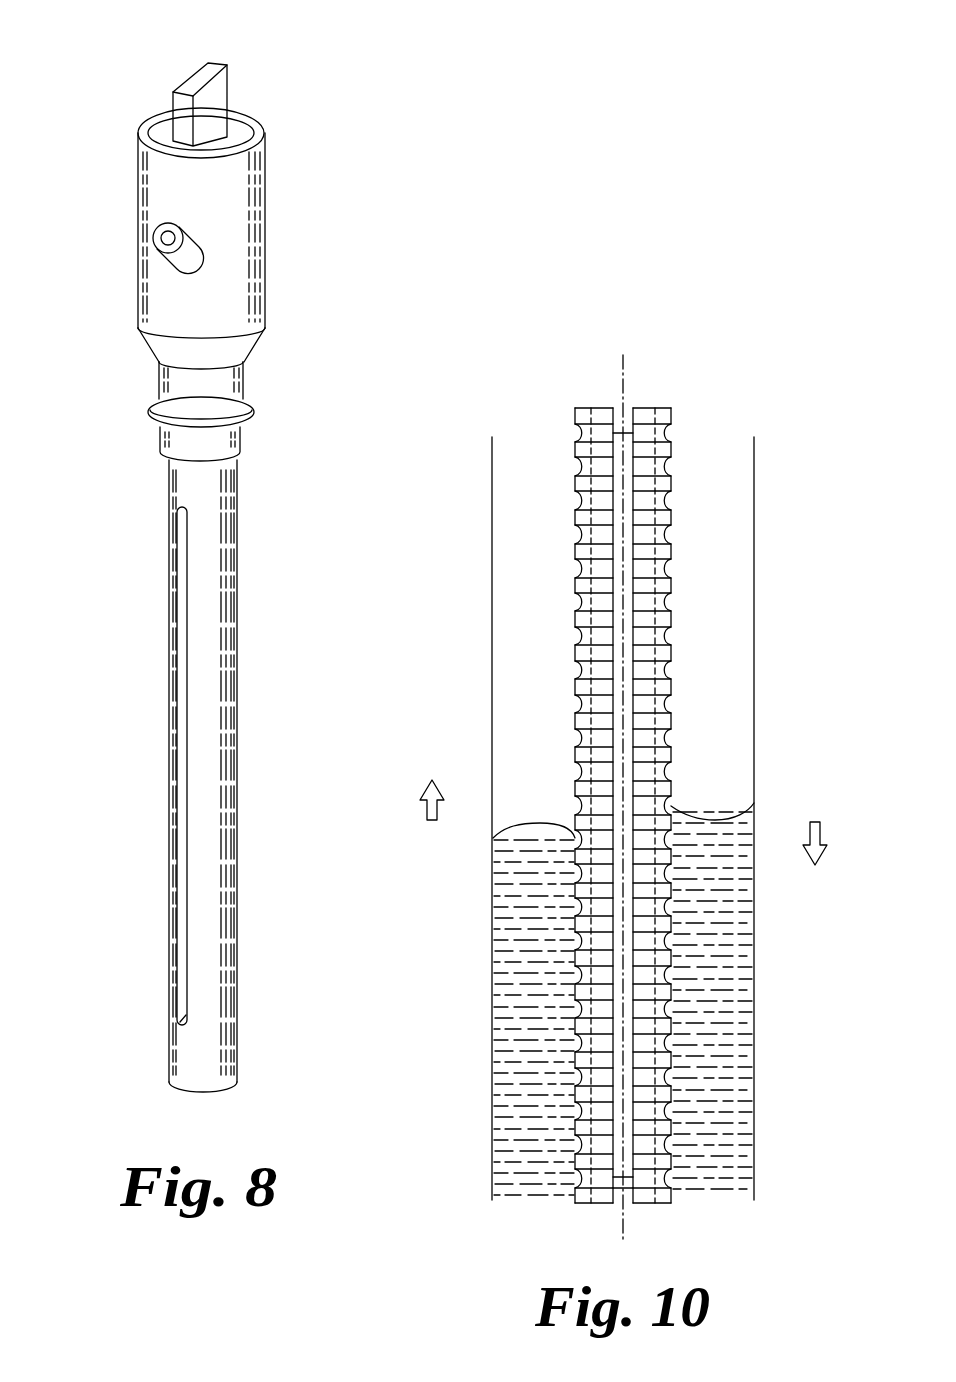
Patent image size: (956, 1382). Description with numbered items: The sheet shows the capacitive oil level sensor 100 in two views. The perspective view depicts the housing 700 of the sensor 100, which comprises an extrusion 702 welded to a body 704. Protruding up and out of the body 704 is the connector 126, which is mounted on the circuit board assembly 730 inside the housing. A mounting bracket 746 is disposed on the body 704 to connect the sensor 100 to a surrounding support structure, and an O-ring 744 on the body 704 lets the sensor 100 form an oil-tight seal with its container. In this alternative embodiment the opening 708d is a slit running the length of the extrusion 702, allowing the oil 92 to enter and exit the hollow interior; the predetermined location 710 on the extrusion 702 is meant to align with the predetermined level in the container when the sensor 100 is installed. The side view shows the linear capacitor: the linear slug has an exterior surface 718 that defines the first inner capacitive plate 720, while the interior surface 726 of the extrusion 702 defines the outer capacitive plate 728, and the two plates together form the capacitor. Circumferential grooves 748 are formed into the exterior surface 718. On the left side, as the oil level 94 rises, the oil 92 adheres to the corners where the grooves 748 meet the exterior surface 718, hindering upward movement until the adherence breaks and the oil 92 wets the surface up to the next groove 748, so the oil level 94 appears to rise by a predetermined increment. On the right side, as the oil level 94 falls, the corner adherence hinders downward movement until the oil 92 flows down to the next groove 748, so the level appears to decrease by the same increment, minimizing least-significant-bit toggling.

In FIG. 8, the sensor 100 is at (119, 110).
In FIG. 8, the connector 126 is at (207, 70).
In FIG. 8, the mounting bracket 746 is at (153, 246).
In FIG. 8, the housing 700 is at (222, 546).
In FIG. 8, the body 704 is at (250, 280).
In FIG. 8, the O-ring 744 is at (148, 412).
In FIG. 8, the extrusion 702 is at (222, 483).
In FIG. 8, the opening 708d is at (178, 650).
In FIG. 8, the predetermined location 710 is at (250, 918).
In FIG. 10, the circuit board assembly 730 is at (628, 465).
In FIG. 10, the exterior surface 718 is at (678, 548).
In FIG. 10, the first inner capacitive plate 720 is at (652, 805).
In FIG. 10, the circumferential grooves 748 is at (674, 601).
In FIG. 10, the interior surface 726 is at (493, 674).
In FIG. 10, the outer capacitive plate 728 is at (757, 731).
In FIG. 10, the oil level 94 is at (483, 834).
In FIG. 10, the oil 92 is at (745, 930).